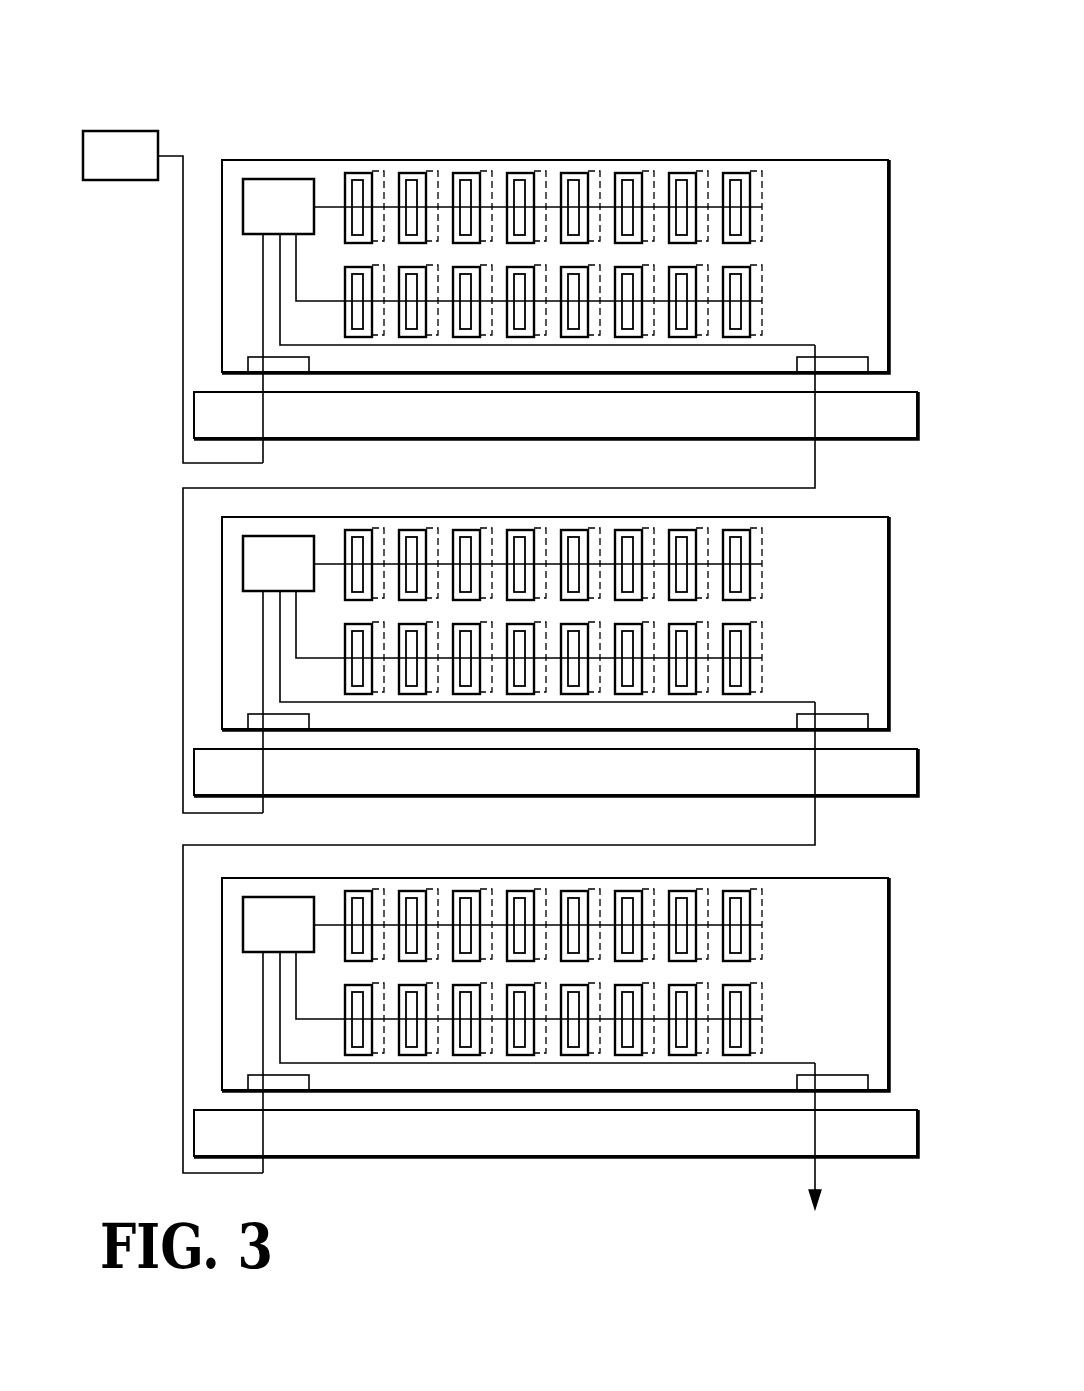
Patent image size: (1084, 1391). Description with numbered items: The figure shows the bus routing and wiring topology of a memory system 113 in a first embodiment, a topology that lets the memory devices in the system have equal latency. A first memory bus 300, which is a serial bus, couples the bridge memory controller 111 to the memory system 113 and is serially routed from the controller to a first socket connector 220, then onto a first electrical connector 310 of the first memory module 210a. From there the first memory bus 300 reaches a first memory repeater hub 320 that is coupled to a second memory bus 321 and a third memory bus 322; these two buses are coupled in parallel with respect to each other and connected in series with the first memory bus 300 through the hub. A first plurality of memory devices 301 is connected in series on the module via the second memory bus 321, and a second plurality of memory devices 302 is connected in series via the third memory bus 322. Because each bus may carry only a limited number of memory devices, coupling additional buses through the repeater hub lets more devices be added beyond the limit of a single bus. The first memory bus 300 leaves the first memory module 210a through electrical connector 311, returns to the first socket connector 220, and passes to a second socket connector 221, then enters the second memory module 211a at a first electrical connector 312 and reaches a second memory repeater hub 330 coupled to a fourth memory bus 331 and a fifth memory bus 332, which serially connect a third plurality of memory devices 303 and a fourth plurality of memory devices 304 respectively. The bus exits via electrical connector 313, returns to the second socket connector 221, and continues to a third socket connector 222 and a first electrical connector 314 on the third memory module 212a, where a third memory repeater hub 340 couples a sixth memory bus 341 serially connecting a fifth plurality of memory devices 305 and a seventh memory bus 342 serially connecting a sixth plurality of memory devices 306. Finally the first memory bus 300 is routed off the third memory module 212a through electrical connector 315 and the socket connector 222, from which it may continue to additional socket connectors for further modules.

The bridge memory controller 111 is at (130, 138).
The memory system 113 is at (681, 136).
The first memory module 210a is at (902, 160).
The second memory module 211a is at (857, 558).
The third memory module 212a is at (857, 911).
The first socket connector 220 is at (574, 450).
The second socket connector 221 is at (503, 822).
The third socket connector 222 is at (500, 1178).
The first memory bus 300 is at (182, 284).
The first plurality of memory devices 301 is at (770, 190).
The second plurality of memory devices 302 is at (770, 312).
The third plurality of memory devices 303 is at (813, 515).
The fourth plurality of memory devices 304 is at (769, 648).
The fifth plurality of memory devices 305 is at (798, 873).
The sixth plurality of memory devices 306 is at (769, 1035).
The first electrical connector 310 is at (275, 364).
The electrical connector 311 is at (845, 366).
The first electrical connector 312 is at (283, 722).
The electrical connector 313 is at (845, 724).
The first electrical connector 314 is at (283, 1082).
The electrical connector 315 is at (845, 1084).
The first memory repeater hub 320 is at (266, 190).
The second memory bus 321 is at (320, 205).
The third memory bus 322 is at (314, 292).
The second memory repeater hub 330 is at (267, 548).
The fourth memory bus 331 is at (318, 563).
The fifth memory bus 332 is at (314, 649).
The third memory repeater hub 340 is at (266, 907).
The sixth memory bus 341 is at (320, 922).
The seventh memory bus 342 is at (314, 1008).